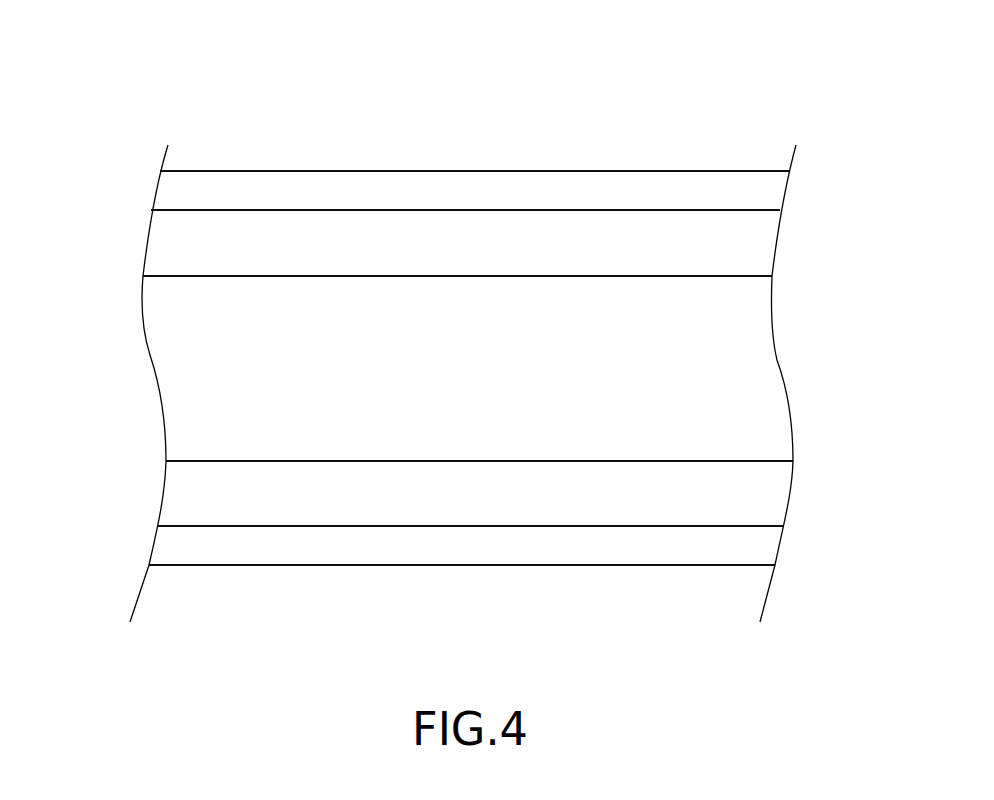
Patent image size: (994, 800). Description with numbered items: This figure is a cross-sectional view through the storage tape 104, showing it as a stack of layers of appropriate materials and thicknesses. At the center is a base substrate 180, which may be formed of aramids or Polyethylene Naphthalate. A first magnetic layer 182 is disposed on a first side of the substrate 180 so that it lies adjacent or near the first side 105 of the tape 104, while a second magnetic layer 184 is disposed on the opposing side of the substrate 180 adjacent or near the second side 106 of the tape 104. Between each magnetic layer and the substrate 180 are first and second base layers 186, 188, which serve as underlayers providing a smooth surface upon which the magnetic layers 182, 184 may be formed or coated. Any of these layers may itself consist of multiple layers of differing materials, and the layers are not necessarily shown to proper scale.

The tape 104 is at (796, 167).
The first side of the tape 105 is at (659, 170).
The second side of the tape 106 is at (647, 566).
The base substrate 180 is at (168, 374).
The first magnetic layer 182 is at (168, 200).
The second magnetic layer 184 is at (166, 550).
The first base layer 186 is at (168, 246).
The second base layer 188 is at (166, 490).